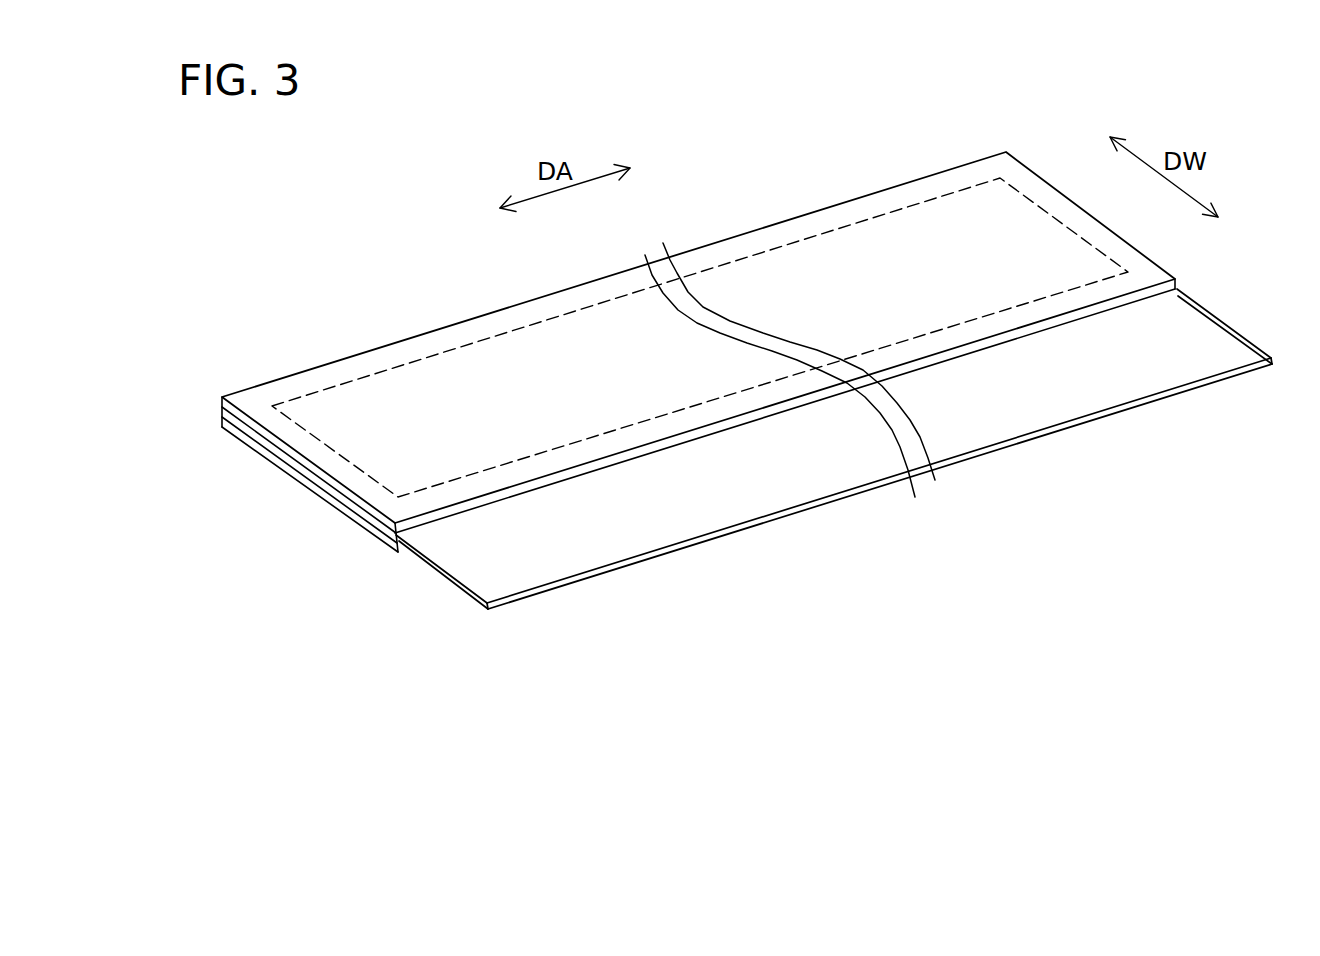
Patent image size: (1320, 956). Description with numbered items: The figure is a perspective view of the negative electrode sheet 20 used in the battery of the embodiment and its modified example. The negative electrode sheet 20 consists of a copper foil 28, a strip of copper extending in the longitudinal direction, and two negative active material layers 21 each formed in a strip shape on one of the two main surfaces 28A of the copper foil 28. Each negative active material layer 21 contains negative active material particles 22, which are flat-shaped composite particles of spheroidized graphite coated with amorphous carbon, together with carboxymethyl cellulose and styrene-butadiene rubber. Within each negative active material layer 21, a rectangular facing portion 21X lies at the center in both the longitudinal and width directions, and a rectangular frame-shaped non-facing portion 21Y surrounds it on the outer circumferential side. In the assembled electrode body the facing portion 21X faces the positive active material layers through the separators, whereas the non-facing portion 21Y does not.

The negative electrode sheet 20 is at (707, 390).
The negative active material layer 21 is at (671, 397).
The negative active material particles 22 is at (310, 474).
The facing portion 21X is at (700, 314).
The non-facing portion 21Y is at (698, 316).
The copper foil 28 is at (795, 473).
The main surface 28A is at (879, 490).